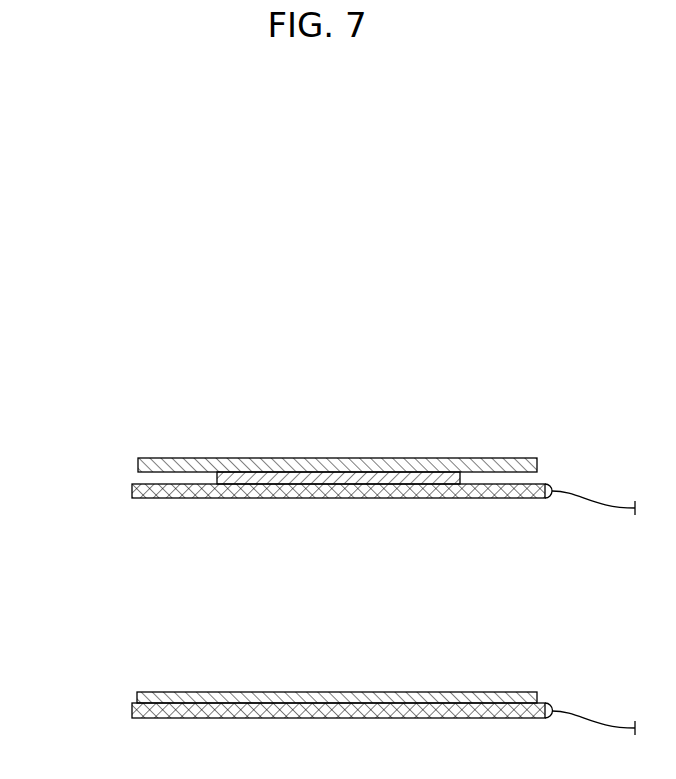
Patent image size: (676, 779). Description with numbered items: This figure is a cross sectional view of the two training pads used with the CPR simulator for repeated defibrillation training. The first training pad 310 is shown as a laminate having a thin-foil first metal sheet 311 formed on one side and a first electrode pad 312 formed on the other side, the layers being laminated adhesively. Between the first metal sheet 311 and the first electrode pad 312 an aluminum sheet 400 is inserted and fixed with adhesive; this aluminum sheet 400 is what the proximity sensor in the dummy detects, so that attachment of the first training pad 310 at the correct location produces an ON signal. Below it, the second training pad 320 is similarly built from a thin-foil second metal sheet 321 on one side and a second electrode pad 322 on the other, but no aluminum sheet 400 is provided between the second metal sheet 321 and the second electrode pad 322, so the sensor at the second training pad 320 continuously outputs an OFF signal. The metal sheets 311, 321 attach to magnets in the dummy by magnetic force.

The first training pad 310 is at (71, 457).
The first metal sheet 311 is at (143, 465).
The first electrode pad 312 is at (137, 491).
The second training pad 320 is at (71, 681).
The second metal sheet 321 is at (148, 697).
The second electrode pad 322 is at (150, 712).
The aluminum sheet 400 is at (300, 478).